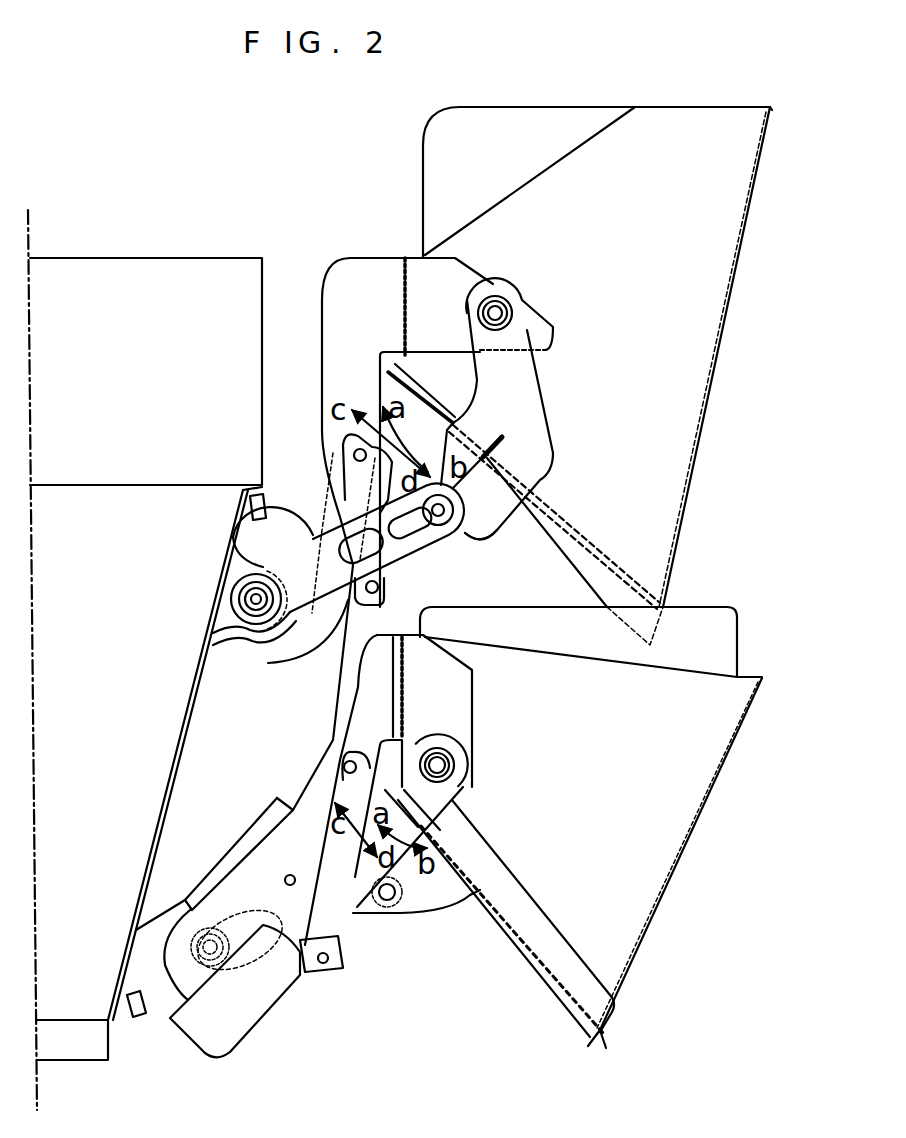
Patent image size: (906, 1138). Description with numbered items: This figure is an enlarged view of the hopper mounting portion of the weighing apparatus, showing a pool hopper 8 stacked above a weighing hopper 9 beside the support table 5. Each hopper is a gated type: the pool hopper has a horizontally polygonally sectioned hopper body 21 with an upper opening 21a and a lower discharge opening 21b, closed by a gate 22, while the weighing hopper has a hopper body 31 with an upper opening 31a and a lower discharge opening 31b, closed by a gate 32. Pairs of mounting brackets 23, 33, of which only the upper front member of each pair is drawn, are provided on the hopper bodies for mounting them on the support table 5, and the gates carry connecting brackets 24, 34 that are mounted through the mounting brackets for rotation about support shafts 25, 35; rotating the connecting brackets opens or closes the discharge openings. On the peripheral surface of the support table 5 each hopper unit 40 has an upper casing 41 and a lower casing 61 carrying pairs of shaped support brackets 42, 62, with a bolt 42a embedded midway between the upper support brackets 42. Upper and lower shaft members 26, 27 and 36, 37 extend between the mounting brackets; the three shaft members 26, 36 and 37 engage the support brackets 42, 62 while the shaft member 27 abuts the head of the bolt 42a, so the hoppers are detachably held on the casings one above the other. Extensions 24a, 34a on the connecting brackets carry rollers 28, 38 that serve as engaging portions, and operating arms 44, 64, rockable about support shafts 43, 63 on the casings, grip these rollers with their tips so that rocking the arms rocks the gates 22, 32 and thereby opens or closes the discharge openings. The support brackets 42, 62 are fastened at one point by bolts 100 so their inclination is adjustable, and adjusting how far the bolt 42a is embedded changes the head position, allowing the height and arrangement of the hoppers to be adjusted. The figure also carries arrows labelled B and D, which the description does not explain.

The support table 5 is at (121, 280).
The direction B is at (201, 255).
The pool hopper 8 is at (773, 106).
The weighing hopper 9 is at (766, 675).
The hopper body 21 is at (703, 347).
The upper opening 21a is at (583, 106).
The lower discharge opening 21b is at (562, 562).
The gate 22 is at (578, 528).
The mounting bracket 23 is at (340, 285).
The connecting bracket 24 is at (530, 400).
The extension 24a is at (490, 520).
The support shaft 25 is at (499, 308).
The upper shaft member 26 is at (358, 452).
The lower shaft member 27 is at (380, 604).
The roller 28 is at (443, 525).
The hopper body 31 is at (673, 842).
The upper opening 31a is at (700, 607).
The lower discharge opening 31b is at (497, 907).
The gate 32 is at (540, 960).
The mounting bracket 33 is at (350, 715).
The connecting bracket 34 is at (465, 785).
The extension 34a is at (435, 903).
The support shaft 35 is at (452, 765).
The upper shaft member 36 is at (343, 765).
The lower shaft member 37 is at (326, 975).
The roller 38 is at (393, 903).
The hopper unit 40 is at (301, 997).
The upper casing 41 is at (220, 720).
The support bracket 42 is at (327, 515).
The bolt 42a is at (280, 664).
The support shaft 43 is at (240, 590).
The operating arm 44 is at (400, 552).
The lower casing 61 is at (250, 1025).
The support bracket 62 is at (300, 853).
The support shaft 63 is at (150, 988).
The operating arm 64 is at (368, 920).
The bolt 100 is at (258, 890).
The direction D is at (225, 760).